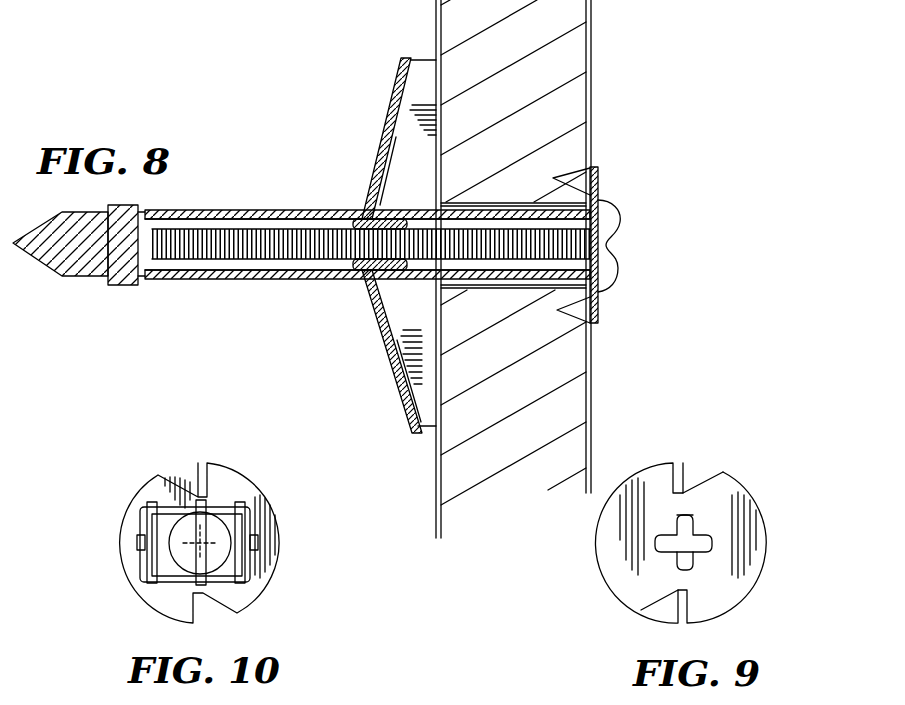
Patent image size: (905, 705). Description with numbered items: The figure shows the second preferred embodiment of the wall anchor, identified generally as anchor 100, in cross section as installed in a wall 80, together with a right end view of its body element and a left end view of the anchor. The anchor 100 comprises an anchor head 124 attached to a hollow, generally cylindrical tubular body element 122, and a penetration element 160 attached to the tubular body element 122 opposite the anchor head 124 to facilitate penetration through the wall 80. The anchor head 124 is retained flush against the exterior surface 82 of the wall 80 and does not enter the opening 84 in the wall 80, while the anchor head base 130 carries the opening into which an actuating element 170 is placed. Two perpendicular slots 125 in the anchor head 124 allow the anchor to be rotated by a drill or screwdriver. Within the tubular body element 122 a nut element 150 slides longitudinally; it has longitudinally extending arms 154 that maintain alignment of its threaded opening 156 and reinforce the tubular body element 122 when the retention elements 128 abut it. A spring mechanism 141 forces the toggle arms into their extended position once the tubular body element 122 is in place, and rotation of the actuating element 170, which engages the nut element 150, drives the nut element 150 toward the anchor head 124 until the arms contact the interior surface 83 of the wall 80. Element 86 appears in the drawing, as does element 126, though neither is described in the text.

In FIG. 8, the wall 80 is at (600, 413).
In FIG. 8, the exterior surface 82 is at (597, 355).
In FIG. 8, the interior surface 83 is at (436, 31).
In FIG. 8, the opening 84 is at (503, 285).
In FIG. 8, the anchor wing 86 is at (343, 88).
In FIG. 8, the anchor 100 is at (334, 170).
In FIG. 8, the tubular body element 122 is at (277, 290).
In FIG. 8, the anchor head 124 is at (608, 194).
In FIG. 9, the anchor head 124 is at (766, 516).
In FIG. 9, the perpendicular slots 125 is at (677, 517).
In FIG. 8, the prongs 126 is at (596, 182).
In FIG. 9, the prongs 126 is at (725, 495).
In FIG. 8, the retention elements 128 is at (360, 325).
In FIG. 9, the anchor head base 130 is at (677, 550).
In FIG. 8, the spring mechanism 141 is at (396, 178).
In FIG. 10, the spring mechanism 141 is at (142, 525).
In FIG. 10, the nut element 150 is at (273, 538).
In FIG. 8, the longitudinally extending arms 154 is at (360, 212).
In FIG. 10, the threaded opening 156 is at (257, 520).
In FIG. 8, the penetration element 160 is at (110, 300).
In FIG. 8, the actuating element 170 is at (628, 217).